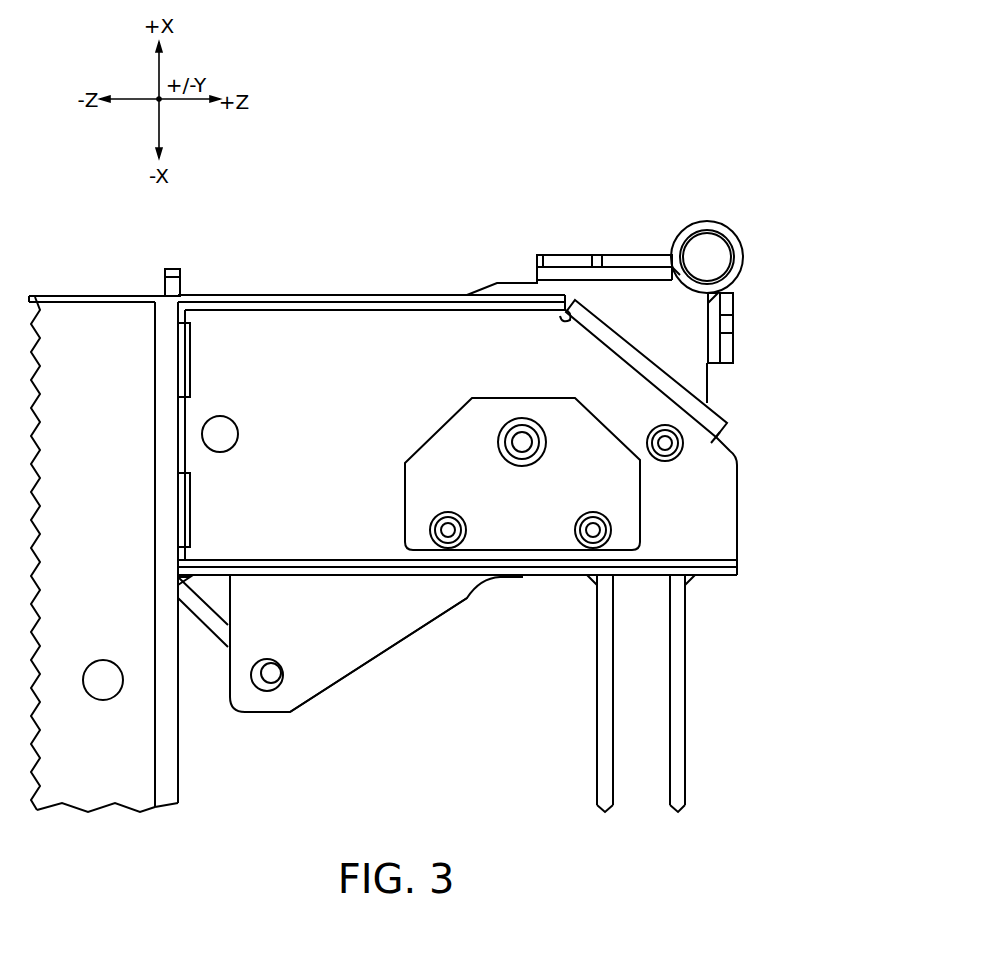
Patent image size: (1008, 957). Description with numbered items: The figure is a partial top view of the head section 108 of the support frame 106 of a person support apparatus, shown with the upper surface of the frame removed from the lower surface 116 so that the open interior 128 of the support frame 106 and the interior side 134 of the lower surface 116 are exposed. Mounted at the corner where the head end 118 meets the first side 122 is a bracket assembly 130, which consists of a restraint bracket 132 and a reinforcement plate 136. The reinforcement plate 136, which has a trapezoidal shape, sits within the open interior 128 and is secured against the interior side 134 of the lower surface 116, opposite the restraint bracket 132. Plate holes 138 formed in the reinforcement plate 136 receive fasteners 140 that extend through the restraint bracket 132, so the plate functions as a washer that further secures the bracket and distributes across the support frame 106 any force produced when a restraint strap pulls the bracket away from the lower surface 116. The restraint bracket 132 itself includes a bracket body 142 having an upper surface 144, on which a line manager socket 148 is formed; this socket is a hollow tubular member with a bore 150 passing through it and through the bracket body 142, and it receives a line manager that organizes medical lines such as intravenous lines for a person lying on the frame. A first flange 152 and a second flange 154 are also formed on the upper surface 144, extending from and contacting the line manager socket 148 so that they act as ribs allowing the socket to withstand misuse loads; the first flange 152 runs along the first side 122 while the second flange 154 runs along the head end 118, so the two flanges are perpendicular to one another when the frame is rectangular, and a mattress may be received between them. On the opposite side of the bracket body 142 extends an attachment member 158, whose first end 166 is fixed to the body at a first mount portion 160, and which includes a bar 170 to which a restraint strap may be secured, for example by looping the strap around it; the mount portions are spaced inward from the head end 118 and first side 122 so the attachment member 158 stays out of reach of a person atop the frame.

The support frame 106 is at (170, 822).
The head section 108 is at (243, 270).
The lower surface 116 is at (84, 292).
The head end 118 is at (387, 296).
The first side 122 is at (688, 692).
The open interior 128 is at (352, 515).
The bracket assembly 130 is at (792, 195).
The restraint bracket 132 is at (620, 225).
The interior side 134 is at (305, 312).
The reinforcement plate 136 is at (487, 378).
The plate holes 138 is at (522, 418).
The fasteners 140 is at (510, 442).
The bracket body 142 is at (415, 645).
The upper surface 144 is at (318, 690).
The line manager socket 148 is at (728, 228).
The bore 150 is at (697, 243).
The first flange 152 is at (737, 350).
The second flange 154 is at (548, 255).
The attachment member 158 is at (228, 703).
The first mount portion 160 is at (271, 662).
The first end 166 is at (271, 684).
The bar 170 is at (208, 637).